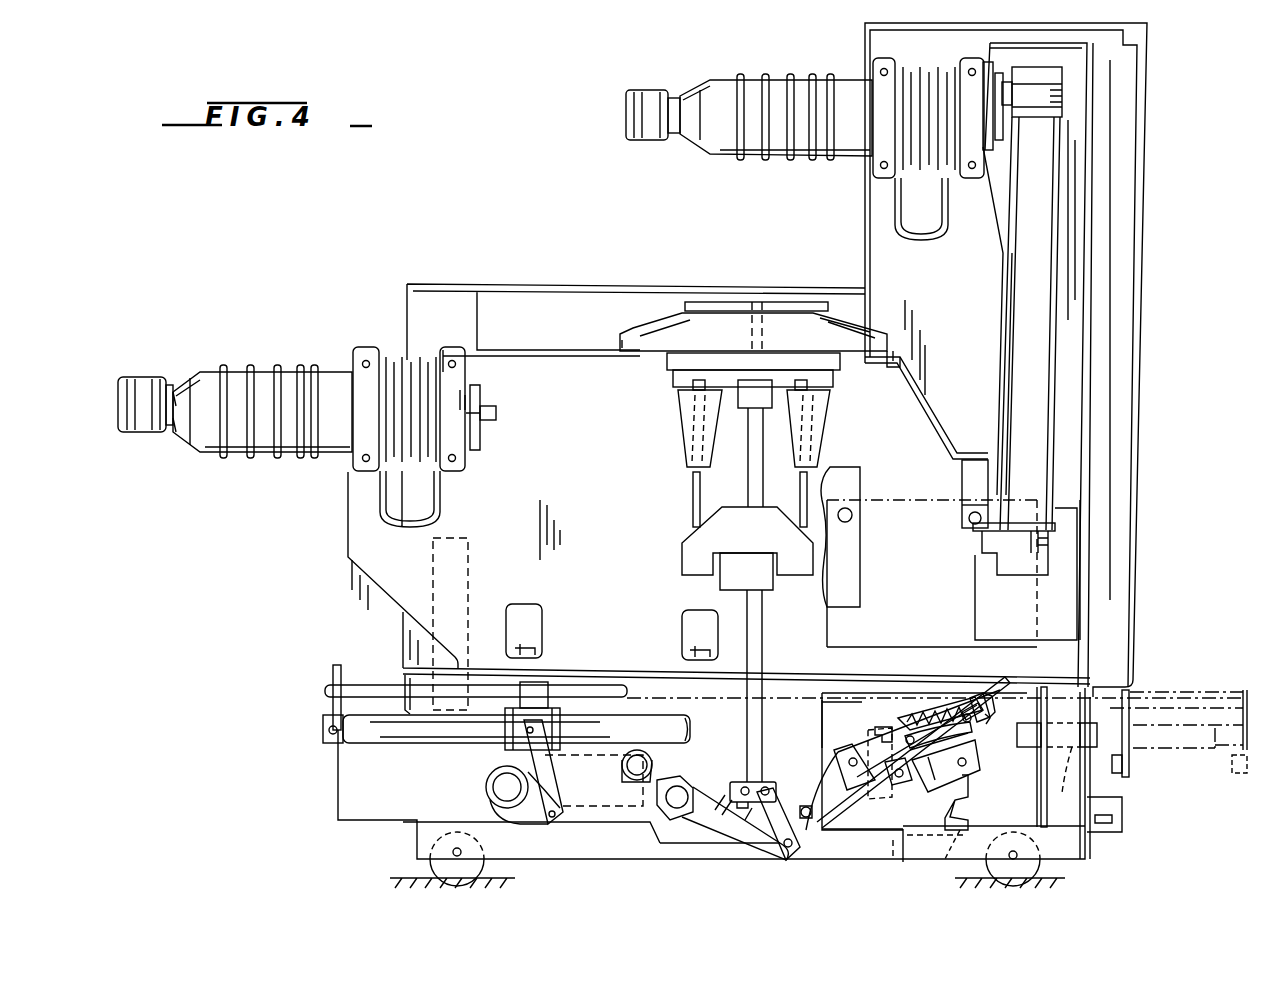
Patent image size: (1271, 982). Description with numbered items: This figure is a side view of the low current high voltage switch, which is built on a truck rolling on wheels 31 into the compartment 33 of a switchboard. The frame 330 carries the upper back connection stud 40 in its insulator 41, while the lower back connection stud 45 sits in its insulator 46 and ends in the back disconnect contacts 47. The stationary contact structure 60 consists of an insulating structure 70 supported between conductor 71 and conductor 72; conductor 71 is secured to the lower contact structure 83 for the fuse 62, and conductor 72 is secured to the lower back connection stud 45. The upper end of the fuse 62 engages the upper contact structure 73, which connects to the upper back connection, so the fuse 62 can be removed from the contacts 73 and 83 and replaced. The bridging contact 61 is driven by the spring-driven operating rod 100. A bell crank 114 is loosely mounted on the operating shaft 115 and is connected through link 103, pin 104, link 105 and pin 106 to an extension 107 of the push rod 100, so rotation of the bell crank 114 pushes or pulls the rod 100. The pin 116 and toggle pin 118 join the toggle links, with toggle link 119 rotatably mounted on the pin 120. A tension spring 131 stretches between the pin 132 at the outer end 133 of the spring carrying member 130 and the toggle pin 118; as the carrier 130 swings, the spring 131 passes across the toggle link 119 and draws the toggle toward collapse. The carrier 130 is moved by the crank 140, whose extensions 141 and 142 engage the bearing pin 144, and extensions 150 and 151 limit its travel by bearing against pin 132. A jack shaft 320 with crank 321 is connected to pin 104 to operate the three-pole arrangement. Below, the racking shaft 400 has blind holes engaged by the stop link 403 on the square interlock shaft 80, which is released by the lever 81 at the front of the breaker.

The wheels 31 is at (482, 837).
The compartment 33 is at (622, 613).
The upper back connection stud 40 is at (678, 138).
The insulator 41 is at (782, 160).
The lower back connection stud 45 is at (170, 386).
The insulator 46 is at (263, 452).
The back disconnect contacts 47 is at (138, 442).
The stationary contact structure 60 is at (634, 325).
The bridging contact 61 is at (674, 544).
The fuse 62 is at (1025, 293).
The insulating structure 70 is at (730, 332).
The conductor 71 is at (927, 424).
The conductor 72 is at (580, 360).
The upper contact structure 73 is at (1042, 82).
The square interlock shaft 80 is at (1185, 692).
The lever 81 is at (1130, 766).
The lower contact structure 83 is at (1023, 546).
The operating rod 100 is at (762, 625).
The link 103 is at (812, 840).
The pin 104 is at (778, 858).
The link 105 is at (802, 806).
The pin 106 is at (776, 783).
The extension 107 is at (765, 770).
The bell crank 114 is at (836, 800).
The shaft 115 is at (850, 765).
The pin 116 is at (906, 784).
The toggle pin 118 is at (880, 732).
The toggle link 119 is at (928, 757).
The pin 120 is at (962, 768).
The spring carrying member 130 is at (962, 712).
The tension spring 131 is at (925, 718).
The pin 132 is at (1000, 706).
The outer end 133 is at (990, 716).
The crank 140 is at (830, 690).
The extension 141 is at (965, 750).
The extension 142 is at (895, 728).
The bearing pin 144 is at (975, 735).
The extension 150 is at (975, 706).
The extension 151 is at (960, 833).
The jack shaft 320 is at (690, 782).
The crank 321 is at (722, 848).
The frame 330 is at (862, 252).
The racking shaft 400 is at (426, 745).
The stop link 403 is at (330, 672).